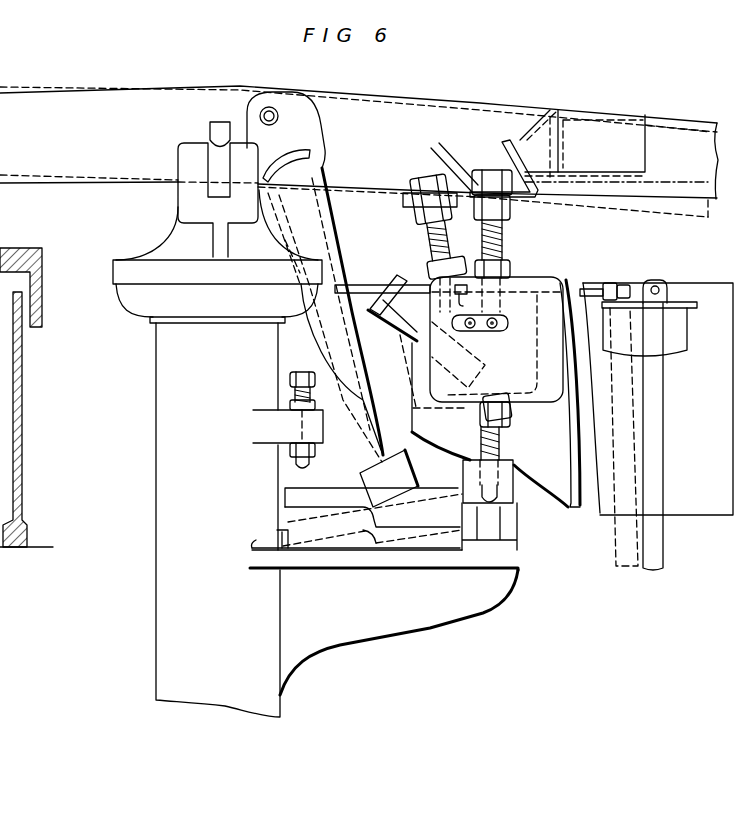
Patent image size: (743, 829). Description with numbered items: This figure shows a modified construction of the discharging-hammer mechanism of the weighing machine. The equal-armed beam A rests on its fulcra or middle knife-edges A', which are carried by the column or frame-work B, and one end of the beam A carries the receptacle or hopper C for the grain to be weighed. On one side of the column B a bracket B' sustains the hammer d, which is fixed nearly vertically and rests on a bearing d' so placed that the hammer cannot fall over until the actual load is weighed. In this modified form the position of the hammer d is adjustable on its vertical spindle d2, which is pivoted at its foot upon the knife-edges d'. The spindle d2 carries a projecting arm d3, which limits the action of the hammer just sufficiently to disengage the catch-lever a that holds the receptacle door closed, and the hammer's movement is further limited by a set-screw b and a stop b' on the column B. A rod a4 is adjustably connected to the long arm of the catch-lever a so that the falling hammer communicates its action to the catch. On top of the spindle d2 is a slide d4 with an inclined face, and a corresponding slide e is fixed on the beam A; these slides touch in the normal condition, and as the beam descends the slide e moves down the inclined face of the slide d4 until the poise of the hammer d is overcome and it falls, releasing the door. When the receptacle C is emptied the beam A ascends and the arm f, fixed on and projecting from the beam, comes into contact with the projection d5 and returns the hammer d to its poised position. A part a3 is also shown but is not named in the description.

The equal-armed beam A is at (359, 151).
The fulcra or middle knife-edges A' is at (205, 127).
The columns or frame-work B is at (217, 430).
The bracket B' is at (384, 622).
The receptacle or hopper C is at (658, 399).
The catch-lever a is at (657, 442).
The hanger cup a3 is at (682, 335).
The rod a4 is at (377, 290).
The set-screw b is at (295, 424).
The stop b' is at (356, 549).
The hammer d is at (481, 342).
The bearing or knife-edges d' is at (512, 504).
The vertical spindle d2 is at (502, 238).
The projecting arm d3 is at (384, 434).
The slide d4 is at (502, 143).
The projection d5 is at (407, 463).
The slide e is at (582, 143).
The arm f is at (315, 277).